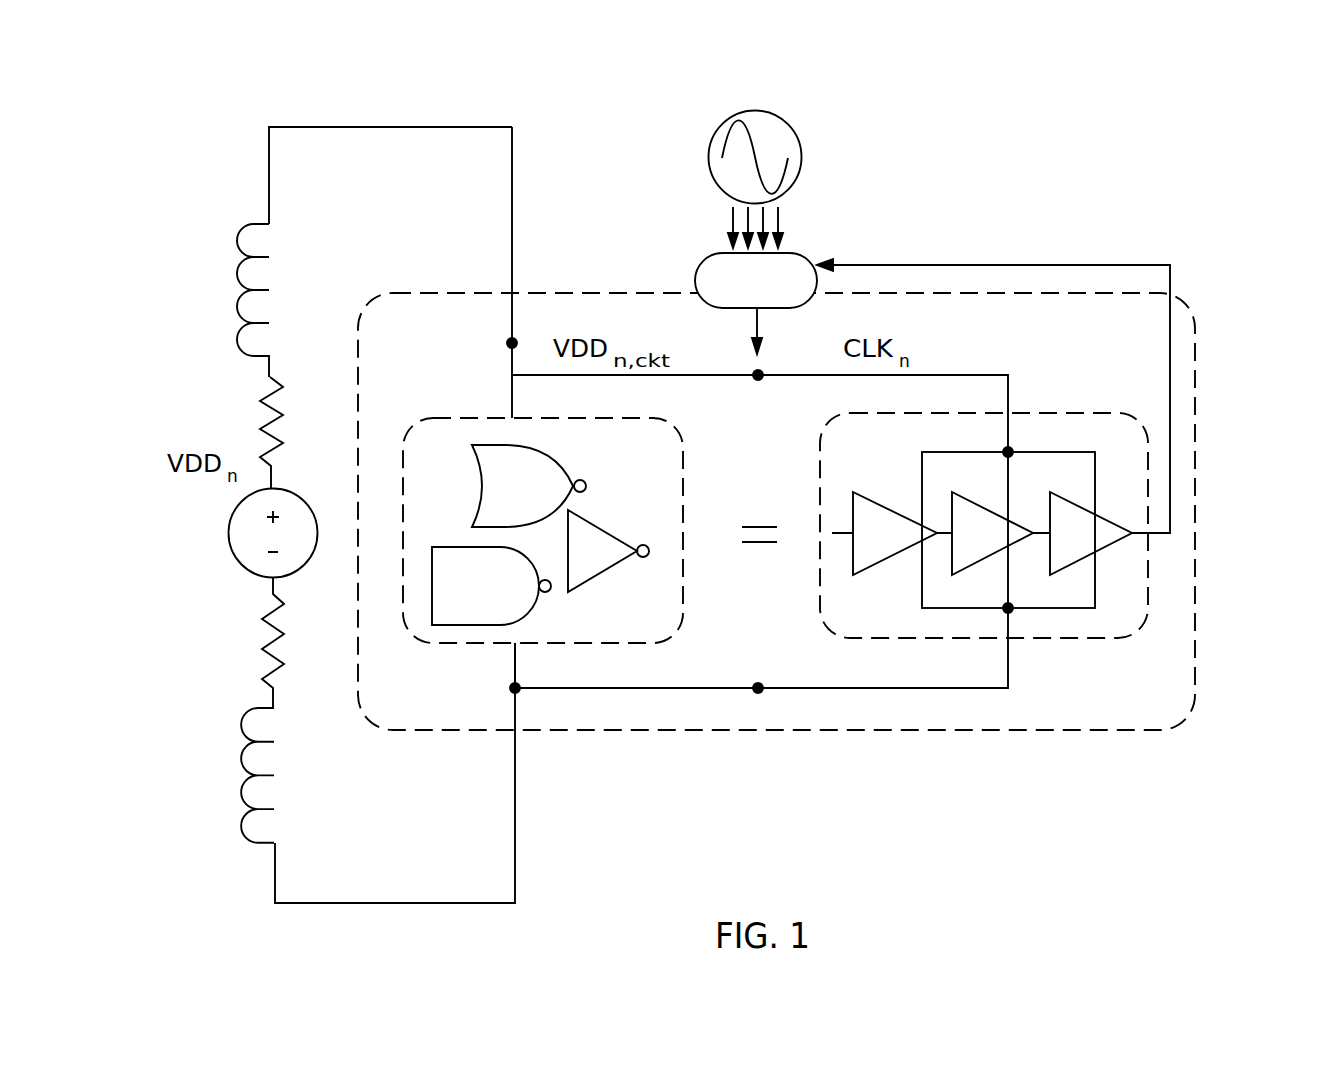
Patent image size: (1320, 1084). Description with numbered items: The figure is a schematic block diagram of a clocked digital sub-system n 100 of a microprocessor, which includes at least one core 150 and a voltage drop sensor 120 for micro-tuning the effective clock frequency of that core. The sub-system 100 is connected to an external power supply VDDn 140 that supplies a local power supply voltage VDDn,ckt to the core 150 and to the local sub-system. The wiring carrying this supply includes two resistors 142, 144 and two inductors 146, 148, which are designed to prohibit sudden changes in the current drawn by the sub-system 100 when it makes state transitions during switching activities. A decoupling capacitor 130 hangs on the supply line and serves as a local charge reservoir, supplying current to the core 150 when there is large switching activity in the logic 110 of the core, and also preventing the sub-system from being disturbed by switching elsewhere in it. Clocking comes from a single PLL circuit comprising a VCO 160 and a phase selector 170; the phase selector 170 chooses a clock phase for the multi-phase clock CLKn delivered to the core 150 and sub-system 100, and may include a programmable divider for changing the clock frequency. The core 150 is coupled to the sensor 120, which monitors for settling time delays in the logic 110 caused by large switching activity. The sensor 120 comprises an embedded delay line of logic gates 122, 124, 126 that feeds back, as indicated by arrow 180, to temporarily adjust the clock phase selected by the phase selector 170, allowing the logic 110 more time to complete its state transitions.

The sub-system n 100 is at (1108, 118).
The logic 110 is at (653, 472).
The voltage drop sensor 120 is at (984, 547).
The logic gate 122 is at (898, 547).
The logic gate 124 is at (996, 547).
The logic gate 126 is at (1095, 547).
The decoupling capacitor 130 is at (748, 545).
The external power supply VDDn 140 is at (229, 533).
The resistor 142 is at (265, 392).
The resistor 144 is at (263, 645).
The inductor 146 is at (237, 274).
The inductor 148 is at (243, 760).
The core 150 is at (1195, 438).
The VCO (Voltage Controlled Oscillator) 160 is at (790, 122).
The phase selector 170 is at (778, 292).
The arrow 180 is at (1083, 265).